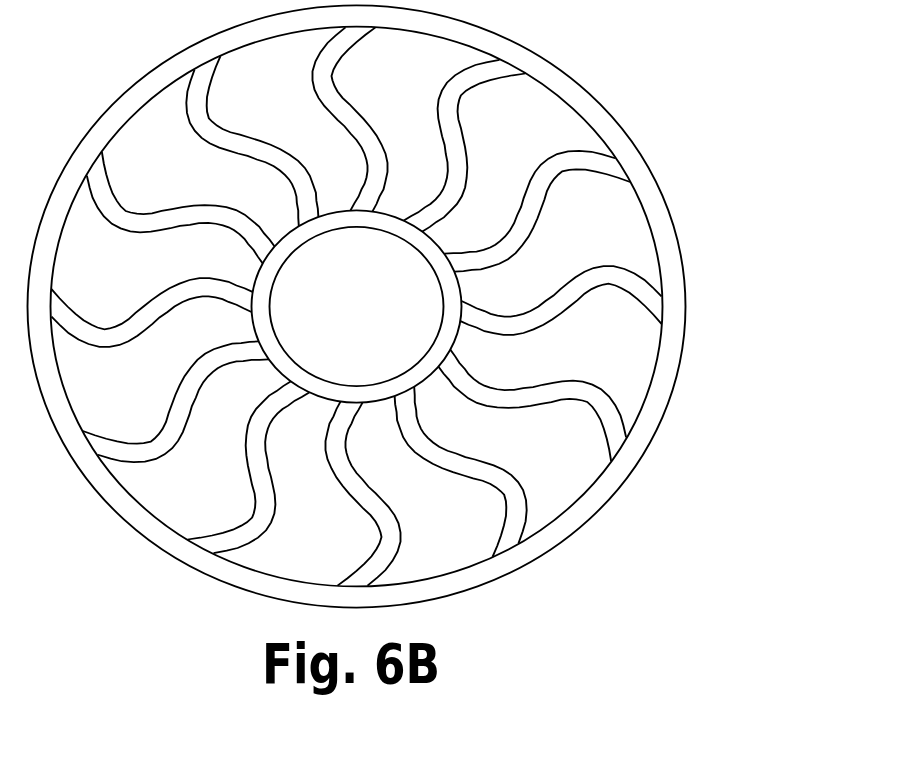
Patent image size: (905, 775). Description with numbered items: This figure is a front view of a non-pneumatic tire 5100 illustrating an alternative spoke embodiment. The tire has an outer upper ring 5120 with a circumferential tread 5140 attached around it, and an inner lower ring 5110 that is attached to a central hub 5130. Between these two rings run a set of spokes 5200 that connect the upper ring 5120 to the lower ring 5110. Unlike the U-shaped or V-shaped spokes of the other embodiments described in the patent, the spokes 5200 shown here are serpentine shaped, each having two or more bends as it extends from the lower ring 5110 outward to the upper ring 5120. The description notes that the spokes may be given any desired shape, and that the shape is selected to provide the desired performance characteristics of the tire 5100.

The non-pneumatic tire 5100 is at (636, 74).
The lower ring 5110 is at (357, 306).
The upper ring 5120 is at (357, 307).
The hub 5130 is at (357, 306).
The circumferential tread 5140 is at (357, 306).
The spokes 5200 is at (645, 188).